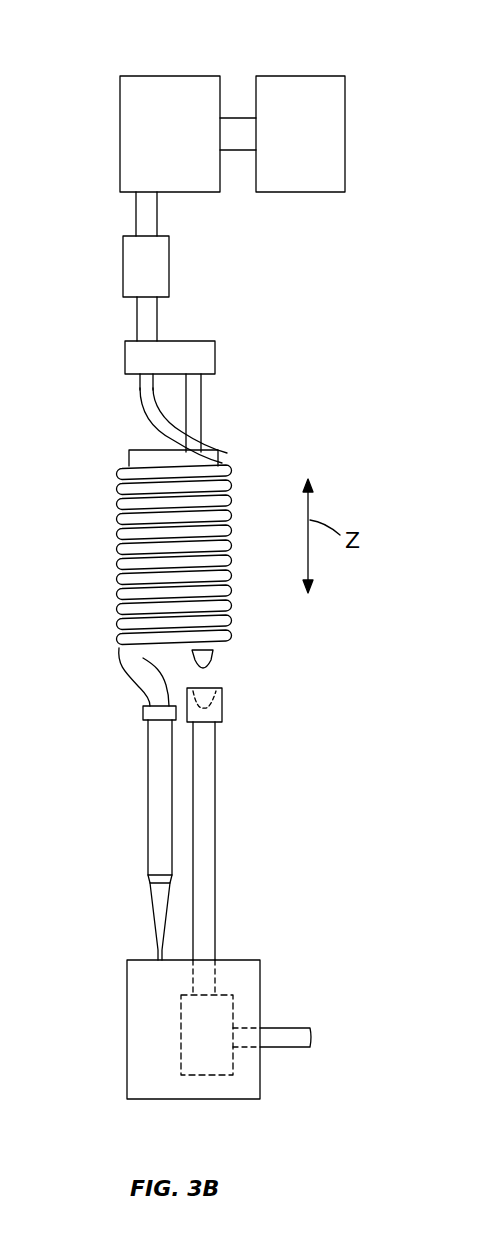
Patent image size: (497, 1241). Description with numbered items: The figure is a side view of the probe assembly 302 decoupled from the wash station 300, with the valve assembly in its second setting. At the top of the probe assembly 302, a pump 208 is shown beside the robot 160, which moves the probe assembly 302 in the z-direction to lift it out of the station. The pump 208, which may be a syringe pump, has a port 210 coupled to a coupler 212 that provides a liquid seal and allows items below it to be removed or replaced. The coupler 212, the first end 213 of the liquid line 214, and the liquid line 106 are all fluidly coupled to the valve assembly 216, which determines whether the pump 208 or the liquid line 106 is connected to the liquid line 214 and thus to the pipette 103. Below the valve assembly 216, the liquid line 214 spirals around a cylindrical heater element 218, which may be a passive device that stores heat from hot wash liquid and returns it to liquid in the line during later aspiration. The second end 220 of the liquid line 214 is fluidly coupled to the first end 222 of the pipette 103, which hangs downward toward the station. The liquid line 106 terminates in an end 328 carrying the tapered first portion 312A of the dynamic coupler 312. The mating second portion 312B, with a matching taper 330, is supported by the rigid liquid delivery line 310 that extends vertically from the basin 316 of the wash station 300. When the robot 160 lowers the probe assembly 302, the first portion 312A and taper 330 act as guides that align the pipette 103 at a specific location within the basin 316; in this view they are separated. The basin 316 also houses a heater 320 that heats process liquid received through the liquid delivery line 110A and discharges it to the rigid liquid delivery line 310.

The probe assembly 302 is at (146, 46).
The pump 208 is at (164, 76).
The robot 160 is at (300, 76).
The port 210 is at (135, 202).
The coupler 212 is at (122, 266).
The valve assembly 216 is at (188, 341).
The first end of liquid line 213 is at (139, 386).
The liquid line 214 is at (139, 397).
The liquid line 106 is at (202, 425).
The heater element 218 is at (128, 445).
The second end of liquid line 220 is at (137, 676).
The first end of pipette 222 is at (147, 732).
The pipette 103 is at (163, 797).
The rigid liquid delivery line 310 is at (215, 783).
The dynamic coupler 312 is at (222, 722).
The first portion of dynamic coupler 312A is at (213, 656).
The end of liquid line 328 is at (212, 666).
The second portion of dynamic coupler 312B is at (222, 690).
The taper 330 is at (223, 697).
The wash station 300 is at (265, 931).
The basin 316 is at (262, 977).
The liquid delivery line 110A is at (292, 1048).
The heater 320 is at (235, 1070).